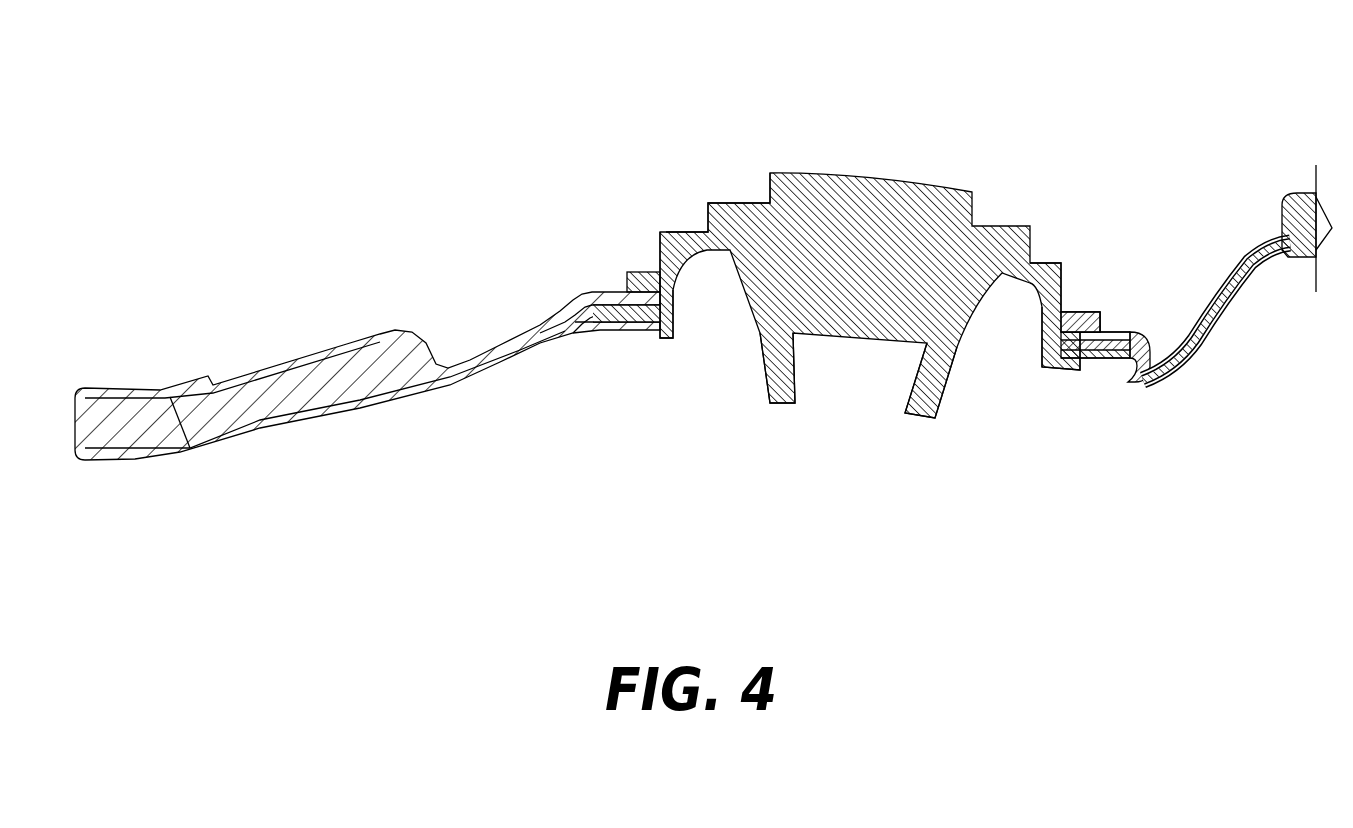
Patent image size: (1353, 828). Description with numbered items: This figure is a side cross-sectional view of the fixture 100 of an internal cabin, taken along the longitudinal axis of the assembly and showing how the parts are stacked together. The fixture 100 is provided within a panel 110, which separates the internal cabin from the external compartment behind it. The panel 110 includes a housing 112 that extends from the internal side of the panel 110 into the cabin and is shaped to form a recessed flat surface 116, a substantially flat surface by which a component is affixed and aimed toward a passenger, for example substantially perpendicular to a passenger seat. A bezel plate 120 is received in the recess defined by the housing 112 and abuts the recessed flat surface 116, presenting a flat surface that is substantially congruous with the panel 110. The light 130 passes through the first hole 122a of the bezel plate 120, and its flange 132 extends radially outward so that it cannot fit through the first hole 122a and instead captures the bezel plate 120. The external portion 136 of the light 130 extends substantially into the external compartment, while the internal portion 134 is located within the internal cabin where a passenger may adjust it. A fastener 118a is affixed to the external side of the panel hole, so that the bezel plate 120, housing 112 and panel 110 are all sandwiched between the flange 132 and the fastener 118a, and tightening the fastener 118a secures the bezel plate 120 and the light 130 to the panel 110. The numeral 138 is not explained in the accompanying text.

The fixture 100 is at (135, 95).
The panel 110 is at (348, 378).
The housing 112 is at (1197, 347).
The recessed flat surface 116 is at (592, 293).
The fastener 118a is at (1095, 312).
The bezel plate 120 is at (607, 324).
The first hole 122a is at (996, 398).
The light 130 is at (848, 330).
The flange 132 is at (660, 338).
The internal portion 134 is at (783, 396).
The external portion 136 is at (707, 210).
The second side wall 138 is at (1050, 263).